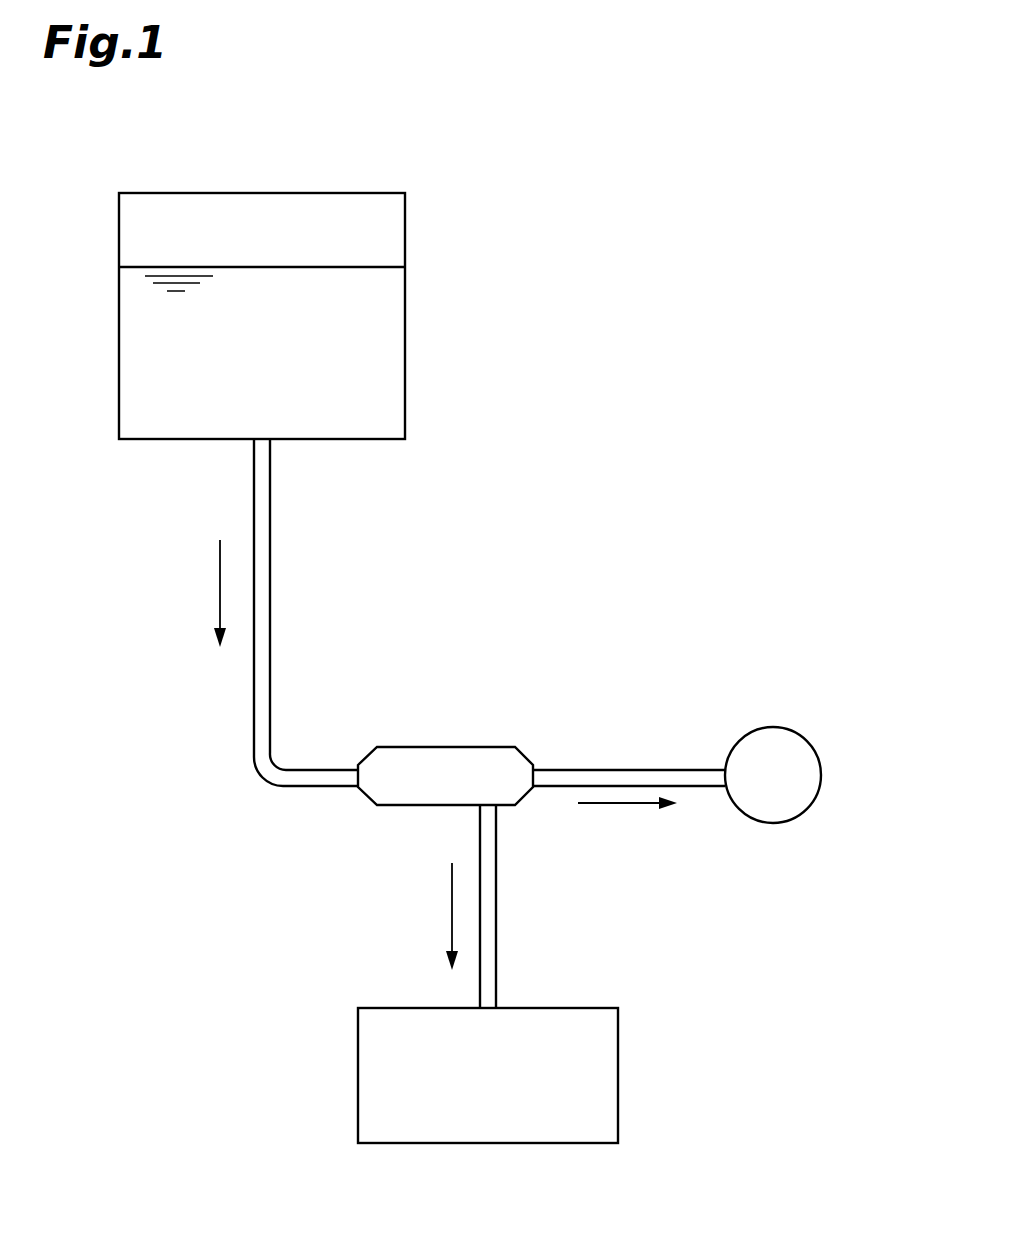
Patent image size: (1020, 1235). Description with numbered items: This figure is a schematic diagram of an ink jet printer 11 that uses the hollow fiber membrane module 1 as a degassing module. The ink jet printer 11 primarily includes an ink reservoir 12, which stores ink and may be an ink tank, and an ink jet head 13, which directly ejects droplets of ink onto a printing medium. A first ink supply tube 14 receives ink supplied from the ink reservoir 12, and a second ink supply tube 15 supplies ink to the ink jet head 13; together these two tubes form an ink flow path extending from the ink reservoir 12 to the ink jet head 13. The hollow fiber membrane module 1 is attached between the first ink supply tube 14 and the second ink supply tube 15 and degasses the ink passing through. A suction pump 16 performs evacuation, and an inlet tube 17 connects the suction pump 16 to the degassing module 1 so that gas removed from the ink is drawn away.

The hollow fiber membrane module 1 is at (416, 746).
The ink jet printer 11 is at (835, 321).
The ink reservoir 12 is at (407, 343).
The ink jet head 13 is at (620, 1046).
The first ink supply tube 14 is at (272, 570).
The second ink supply tube 15 is at (497, 919).
The suction pump 16 is at (801, 731).
The inlet tube 17 is at (617, 768).